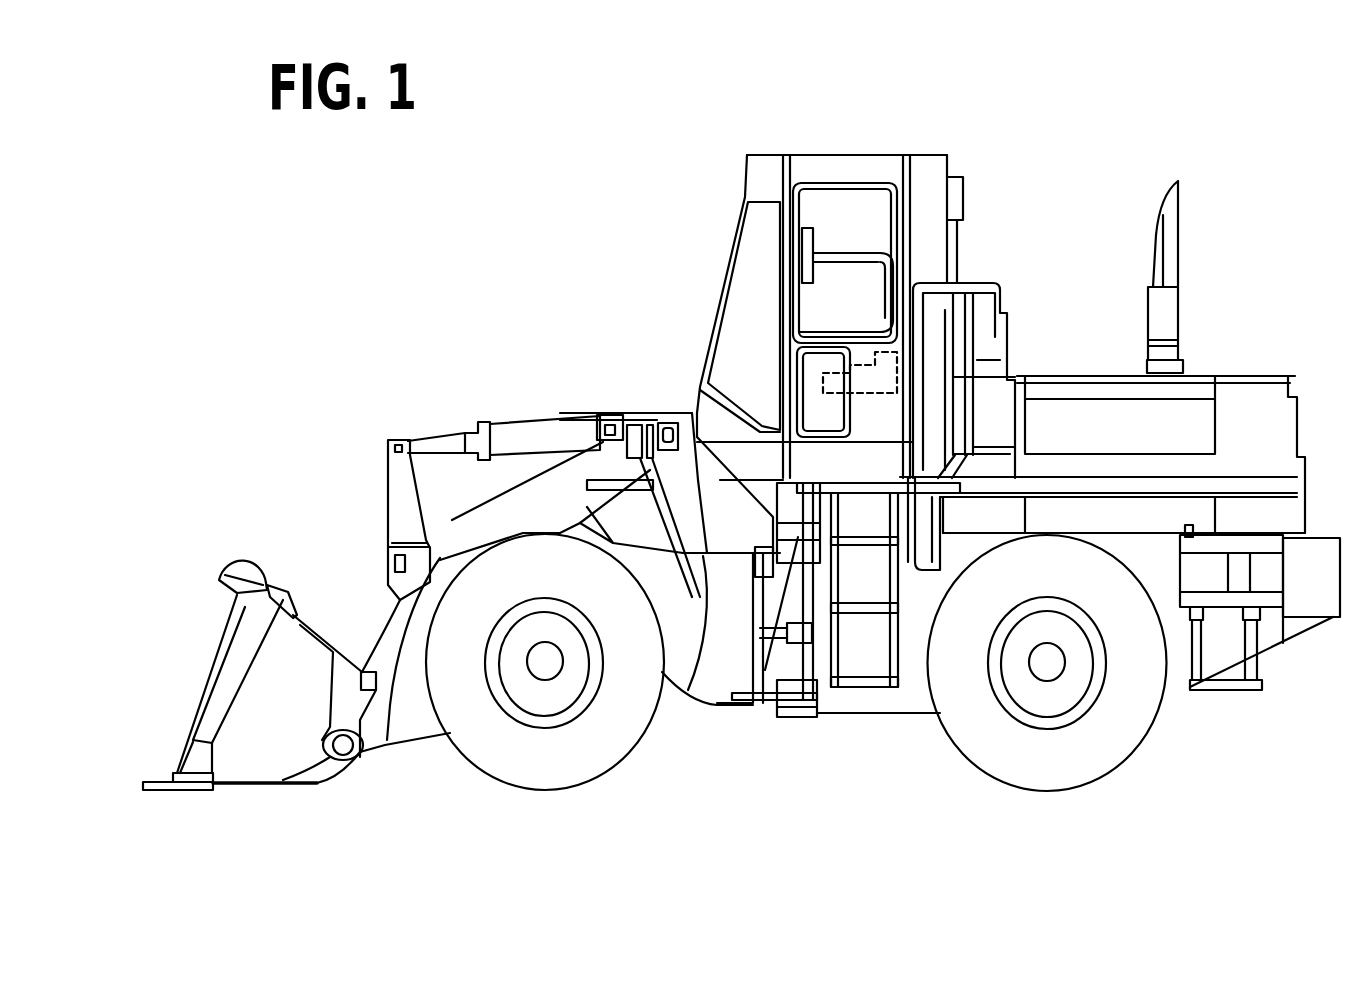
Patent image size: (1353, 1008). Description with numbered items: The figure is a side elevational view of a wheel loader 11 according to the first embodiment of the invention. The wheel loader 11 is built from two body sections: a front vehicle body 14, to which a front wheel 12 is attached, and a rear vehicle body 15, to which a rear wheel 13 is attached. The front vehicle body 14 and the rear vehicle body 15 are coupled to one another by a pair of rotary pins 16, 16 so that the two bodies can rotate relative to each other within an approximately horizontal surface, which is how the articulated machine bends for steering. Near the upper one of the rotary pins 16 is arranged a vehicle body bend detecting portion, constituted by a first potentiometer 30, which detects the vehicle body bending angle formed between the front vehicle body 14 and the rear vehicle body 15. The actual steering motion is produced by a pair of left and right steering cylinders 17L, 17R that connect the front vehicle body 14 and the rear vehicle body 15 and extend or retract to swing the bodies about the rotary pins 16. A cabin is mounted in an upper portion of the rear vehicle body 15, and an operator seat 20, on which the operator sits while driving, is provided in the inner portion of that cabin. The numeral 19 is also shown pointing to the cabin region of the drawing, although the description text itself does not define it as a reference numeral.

The wheel loader 11 is at (1295, 132).
The front wheel 12 is at (540, 792).
The rear wheel 13 is at (1062, 784).
The front vehicle body 14 is at (690, 677).
The rear vehicle body 15 is at (1178, 687).
The rotary pin 16 is at (800, 717).
The first potentiometer 30 is at (750, 707).
The left steering cylinder 17L is at (820, 673).
The right steering cylinder 17R is at (820, 673).
The operator cab 19 is at (856, 160).
The operator seat 20 is at (875, 296).